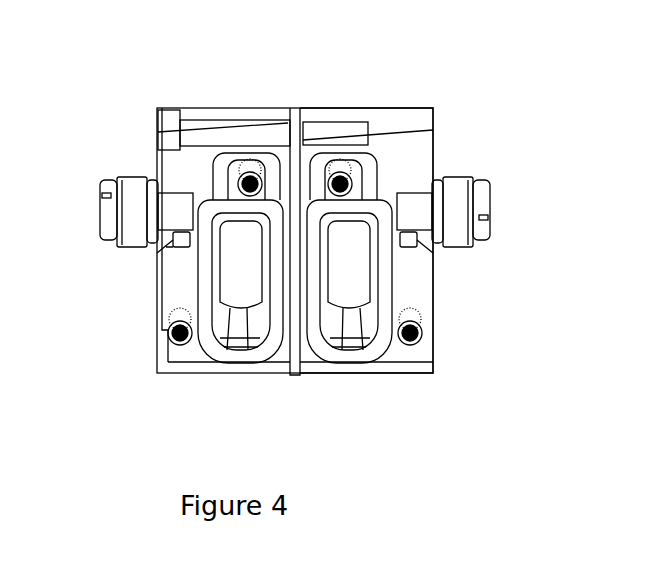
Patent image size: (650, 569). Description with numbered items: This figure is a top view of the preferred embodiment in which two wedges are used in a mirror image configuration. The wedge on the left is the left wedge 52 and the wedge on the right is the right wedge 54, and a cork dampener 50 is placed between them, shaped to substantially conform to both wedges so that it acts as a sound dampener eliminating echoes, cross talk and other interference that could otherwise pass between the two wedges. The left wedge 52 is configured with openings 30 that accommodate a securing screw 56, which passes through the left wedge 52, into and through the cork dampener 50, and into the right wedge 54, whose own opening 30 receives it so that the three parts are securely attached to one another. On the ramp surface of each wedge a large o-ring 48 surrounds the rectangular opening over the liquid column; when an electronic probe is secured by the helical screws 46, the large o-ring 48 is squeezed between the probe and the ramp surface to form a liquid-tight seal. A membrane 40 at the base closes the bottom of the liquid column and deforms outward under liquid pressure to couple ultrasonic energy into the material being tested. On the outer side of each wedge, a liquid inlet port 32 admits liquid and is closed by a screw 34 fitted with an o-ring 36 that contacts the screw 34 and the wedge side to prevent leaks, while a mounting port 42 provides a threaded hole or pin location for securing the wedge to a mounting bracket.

The openings 30 is at (158, 130).
The liquid inlet port 32 is at (391, 200).
The screw 34 is at (135, 200).
The o-ring 36 is at (153, 210).
The membrane 40 is at (347, 272).
The mounting port 42 is at (168, 242).
The helical screws 46 is at (414, 337).
The large o-ring 48 is at (385, 290).
The cork dampener 50 is at (292, 108).
The left wedge 52 is at (195, 363).
The right wedge 54 is at (400, 365).
The securing screw 56 is at (220, 130).